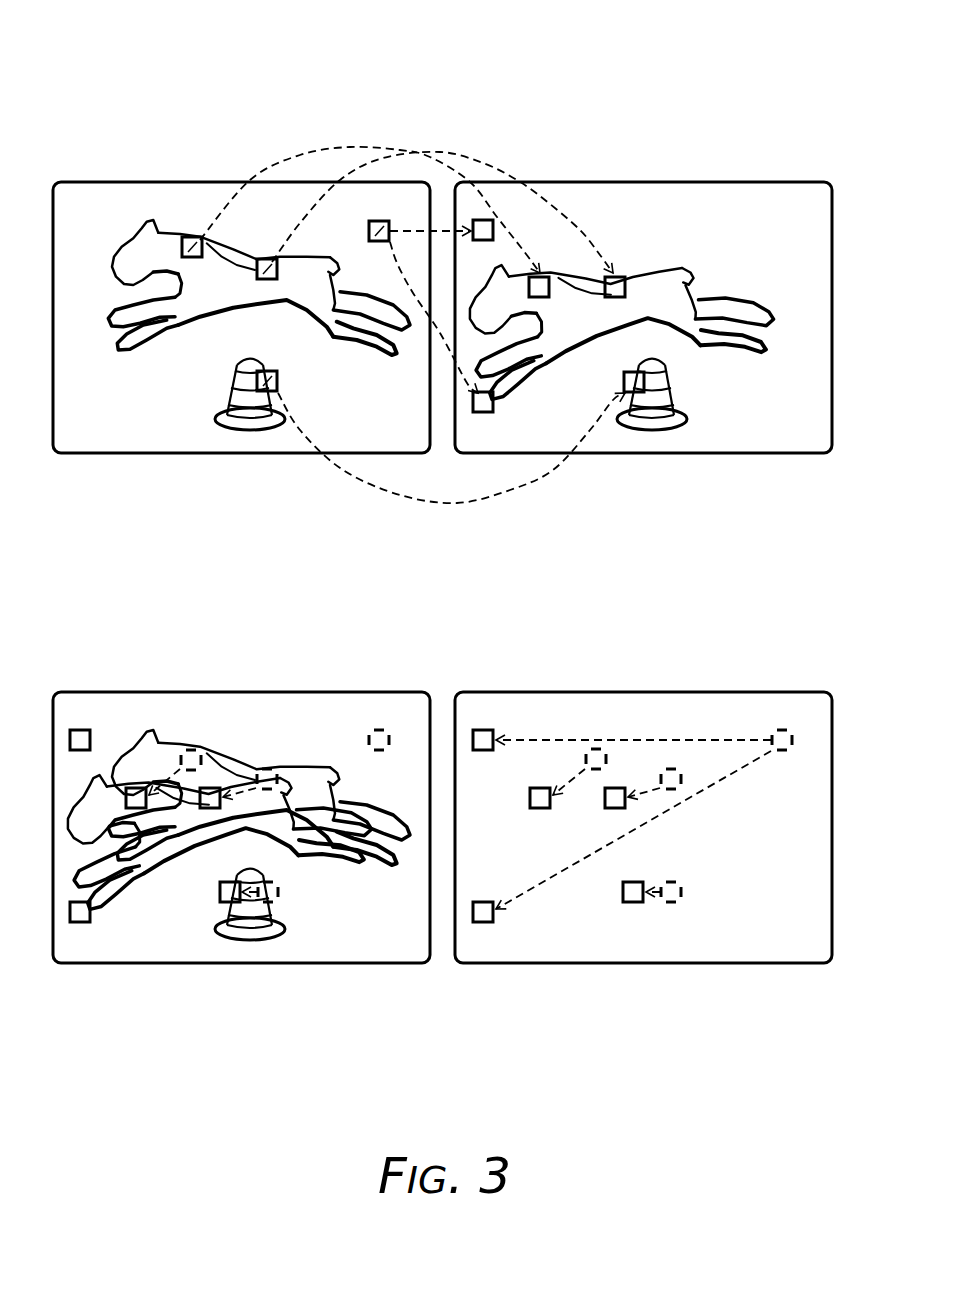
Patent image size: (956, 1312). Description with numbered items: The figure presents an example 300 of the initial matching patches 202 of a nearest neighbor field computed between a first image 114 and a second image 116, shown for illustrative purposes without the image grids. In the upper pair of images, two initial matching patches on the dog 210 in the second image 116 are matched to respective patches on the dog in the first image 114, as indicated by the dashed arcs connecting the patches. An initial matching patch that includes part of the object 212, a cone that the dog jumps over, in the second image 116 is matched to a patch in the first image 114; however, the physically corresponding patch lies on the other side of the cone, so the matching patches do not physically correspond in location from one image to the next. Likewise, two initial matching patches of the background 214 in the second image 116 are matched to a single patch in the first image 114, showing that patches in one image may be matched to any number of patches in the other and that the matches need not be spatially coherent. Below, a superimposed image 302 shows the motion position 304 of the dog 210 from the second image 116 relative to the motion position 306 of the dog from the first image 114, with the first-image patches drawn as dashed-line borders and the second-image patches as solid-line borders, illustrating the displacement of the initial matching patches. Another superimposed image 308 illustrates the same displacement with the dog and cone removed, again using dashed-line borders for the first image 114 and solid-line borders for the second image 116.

The example of initial matching patches 300 is at (645, 58).
The initial matching patches 202 is at (539, 148).
The first image 114 is at (188, 501).
The second image 116 is at (611, 354).
The dog 210 is at (678, 258).
The object 212 is at (721, 370).
The background 214 is at (800, 426).
The superimposed image 302 is at (241, 778).
The motion position 304 is at (98, 780).
The motion position 306 is at (170, 740).
The superimposed image 308 is at (673, 692).